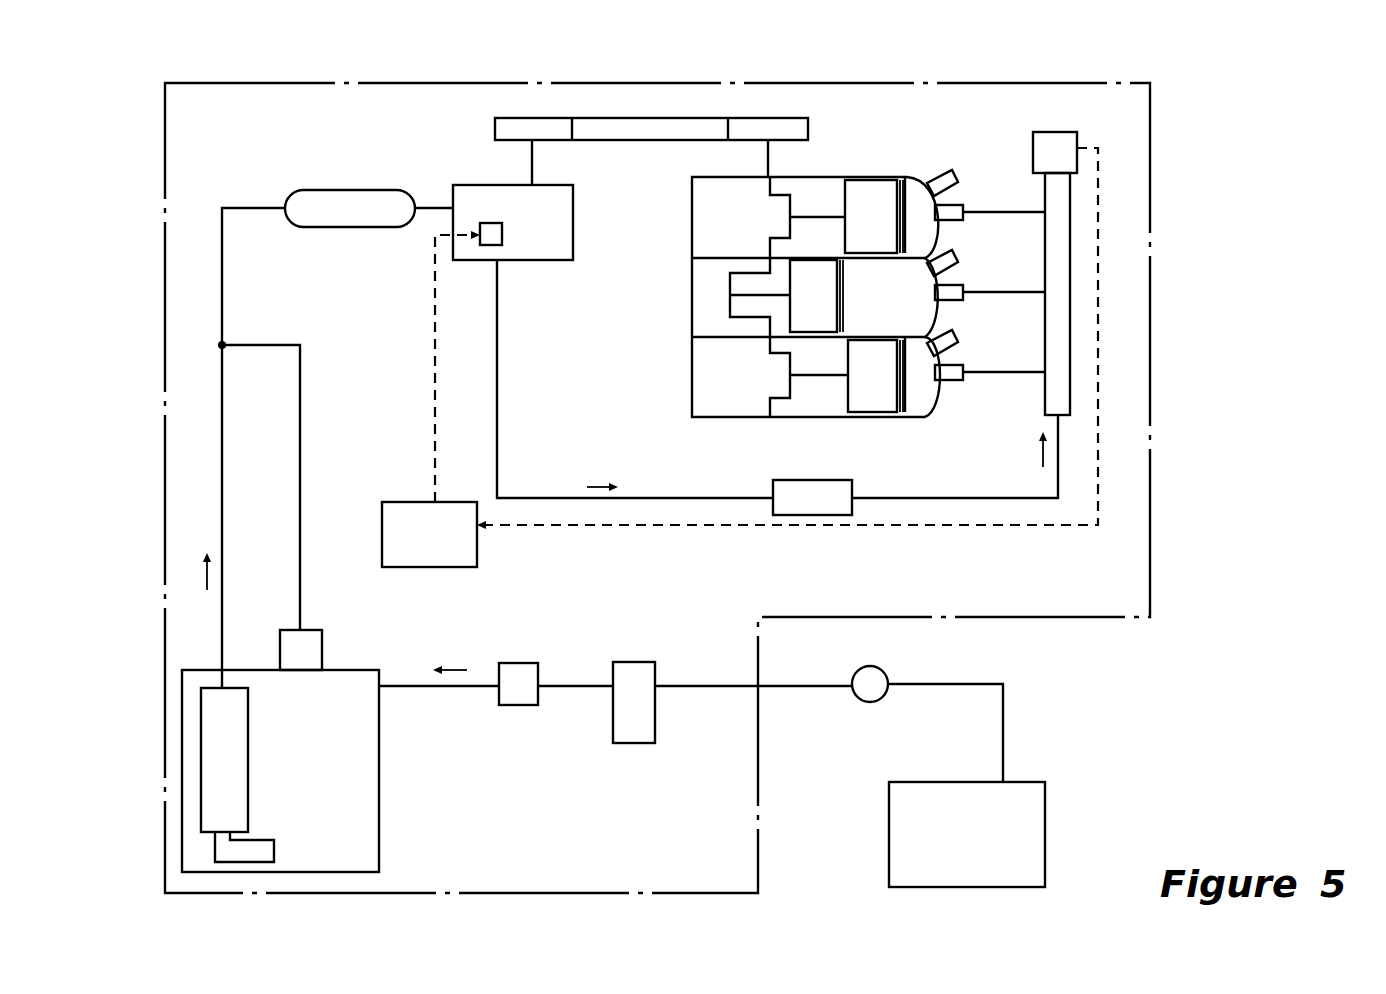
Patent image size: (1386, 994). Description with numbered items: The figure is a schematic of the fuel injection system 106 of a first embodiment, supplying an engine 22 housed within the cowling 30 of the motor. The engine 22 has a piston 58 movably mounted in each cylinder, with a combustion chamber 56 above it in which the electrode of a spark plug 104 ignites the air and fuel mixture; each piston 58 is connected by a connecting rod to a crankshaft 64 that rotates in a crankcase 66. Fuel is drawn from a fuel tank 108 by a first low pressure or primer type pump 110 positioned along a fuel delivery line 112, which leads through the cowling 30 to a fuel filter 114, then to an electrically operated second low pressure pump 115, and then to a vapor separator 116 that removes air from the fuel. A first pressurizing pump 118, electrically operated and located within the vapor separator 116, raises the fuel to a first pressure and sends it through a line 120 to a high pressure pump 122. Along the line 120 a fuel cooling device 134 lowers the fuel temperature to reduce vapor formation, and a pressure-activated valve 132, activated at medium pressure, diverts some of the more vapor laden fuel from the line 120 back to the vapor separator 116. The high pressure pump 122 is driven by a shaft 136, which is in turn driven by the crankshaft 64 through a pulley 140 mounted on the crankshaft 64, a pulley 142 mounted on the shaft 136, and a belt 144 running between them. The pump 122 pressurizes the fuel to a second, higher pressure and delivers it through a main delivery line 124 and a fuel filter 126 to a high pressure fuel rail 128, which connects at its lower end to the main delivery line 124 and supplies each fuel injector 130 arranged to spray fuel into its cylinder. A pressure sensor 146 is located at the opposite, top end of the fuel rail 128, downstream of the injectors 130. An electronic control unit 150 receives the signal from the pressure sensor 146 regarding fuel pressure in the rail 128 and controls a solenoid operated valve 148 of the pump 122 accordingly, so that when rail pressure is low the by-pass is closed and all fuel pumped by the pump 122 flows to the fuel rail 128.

The engine 22 is at (868, 284).
The cowling 30 is at (1150, 357).
The combustion chamber 56 is at (917, 188).
The piston 58 is at (868, 395).
The crankshaft 64 is at (768, 157).
The crankcase 66 is at (712, 402).
The spark plug 104 is at (950, 173).
The fuel injection system 106 is at (401, 118).
The fuel tank 108 is at (1033, 810).
The first low pressure pump 110 is at (870, 672).
The fuel delivery line 112 is at (712, 682).
The fuel filter 114 is at (638, 733).
The second low pressure pump 115 is at (518, 693).
The vapor separator 116 is at (323, 771).
The first pressurizing pump 118 is at (248, 745).
The line 120 is at (260, 412).
The high pressure pump 122 is at (557, 256).
The main delivery line 124 is at (498, 412).
The fuel filter 126 is at (790, 493).
The high pressure fuel rail 128 is at (1058, 240).
The fuel injector 130 is at (947, 212).
The pressure-activated valve 132 is at (292, 640).
The fuel cooling device 134 is at (350, 188).
The shaft 136 is at (532, 162).
The pulley 140 is at (793, 125).
The pulley 142 is at (500, 128).
The belt 144 is at (667, 140).
The pressure sensor 146 is at (1077, 140).
The solenoid operated valve 148 is at (502, 232).
The electronic control unit 150 is at (397, 505).